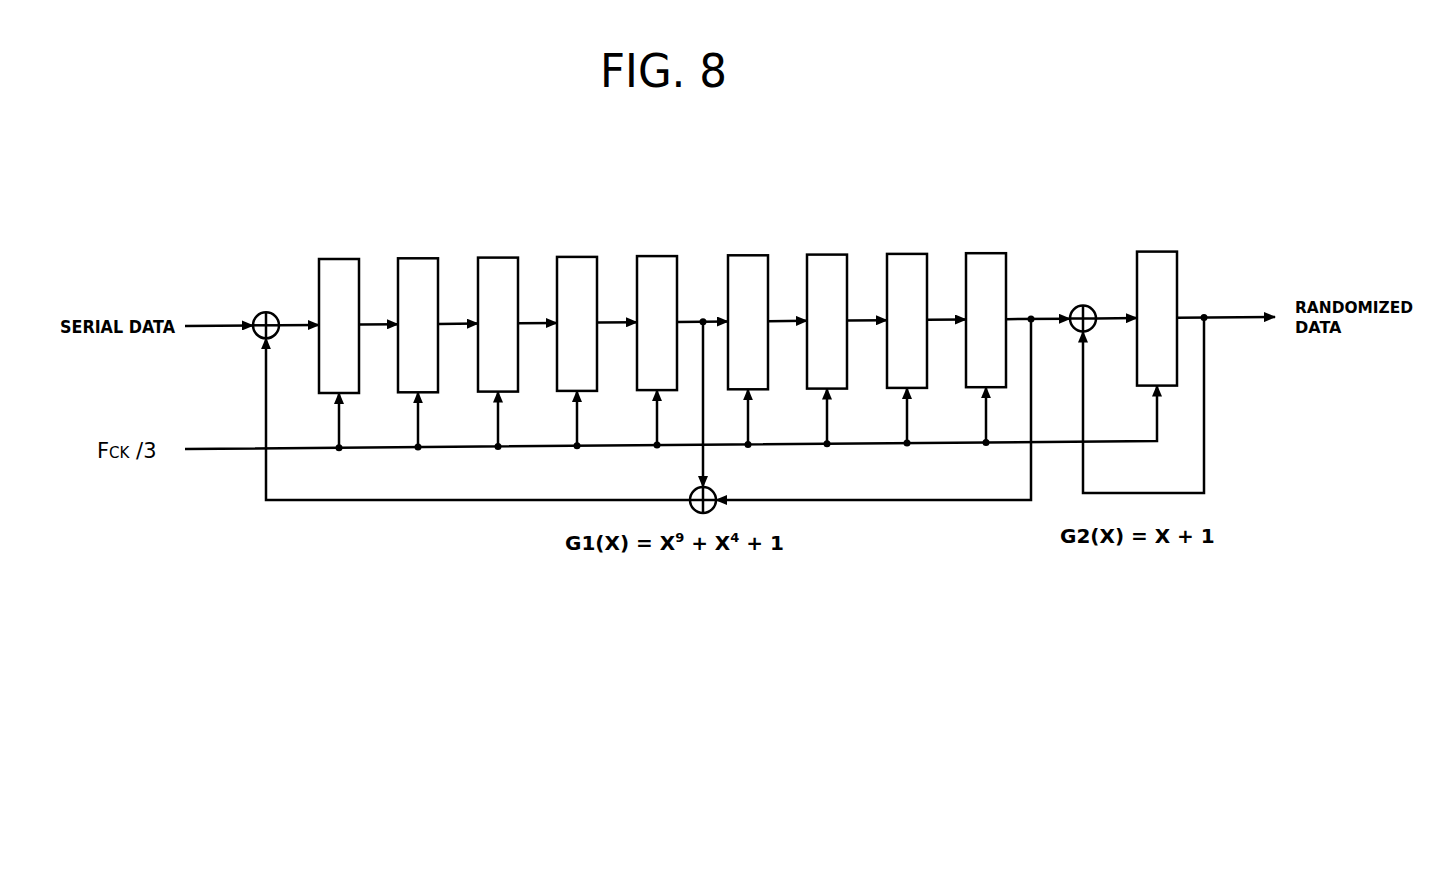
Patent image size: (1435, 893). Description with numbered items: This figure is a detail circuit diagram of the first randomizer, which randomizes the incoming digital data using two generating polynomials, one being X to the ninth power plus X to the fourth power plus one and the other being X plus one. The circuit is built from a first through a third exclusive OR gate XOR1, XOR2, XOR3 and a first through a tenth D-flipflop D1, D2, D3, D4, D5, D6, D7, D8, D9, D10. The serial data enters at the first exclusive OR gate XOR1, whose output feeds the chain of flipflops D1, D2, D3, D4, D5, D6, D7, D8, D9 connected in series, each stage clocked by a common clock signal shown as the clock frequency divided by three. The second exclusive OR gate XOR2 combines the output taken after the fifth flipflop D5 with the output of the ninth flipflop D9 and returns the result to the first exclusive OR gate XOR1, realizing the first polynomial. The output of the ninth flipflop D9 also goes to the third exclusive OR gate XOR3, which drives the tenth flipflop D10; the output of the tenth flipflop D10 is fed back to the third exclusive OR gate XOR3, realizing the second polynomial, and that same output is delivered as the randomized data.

The first D-flipflop D1 is at (340, 259).
The second D-flipflop D2 is at (419, 258).
The third D-flipflop D3 is at (499, 258).
The fourth D-flipflop D4 is at (578, 257).
The fifth D-flipflop D5 is at (658, 256).
The sixth D-flipflop D6 is at (749, 255).
The seventh D-flipflop D7 is at (828, 255).
The eighth D-flipflop D8 is at (908, 254).
The ninth D-flipflop D9 is at (987, 253).
The tenth D-flipflop D10 is at (1158, 252).
The first exclusive OR gate XOR1 is at (268, 312).
The second exclusive OR gate XOR2 is at (712, 490).
The third exclusive OR gate XOR3 is at (1084, 305).